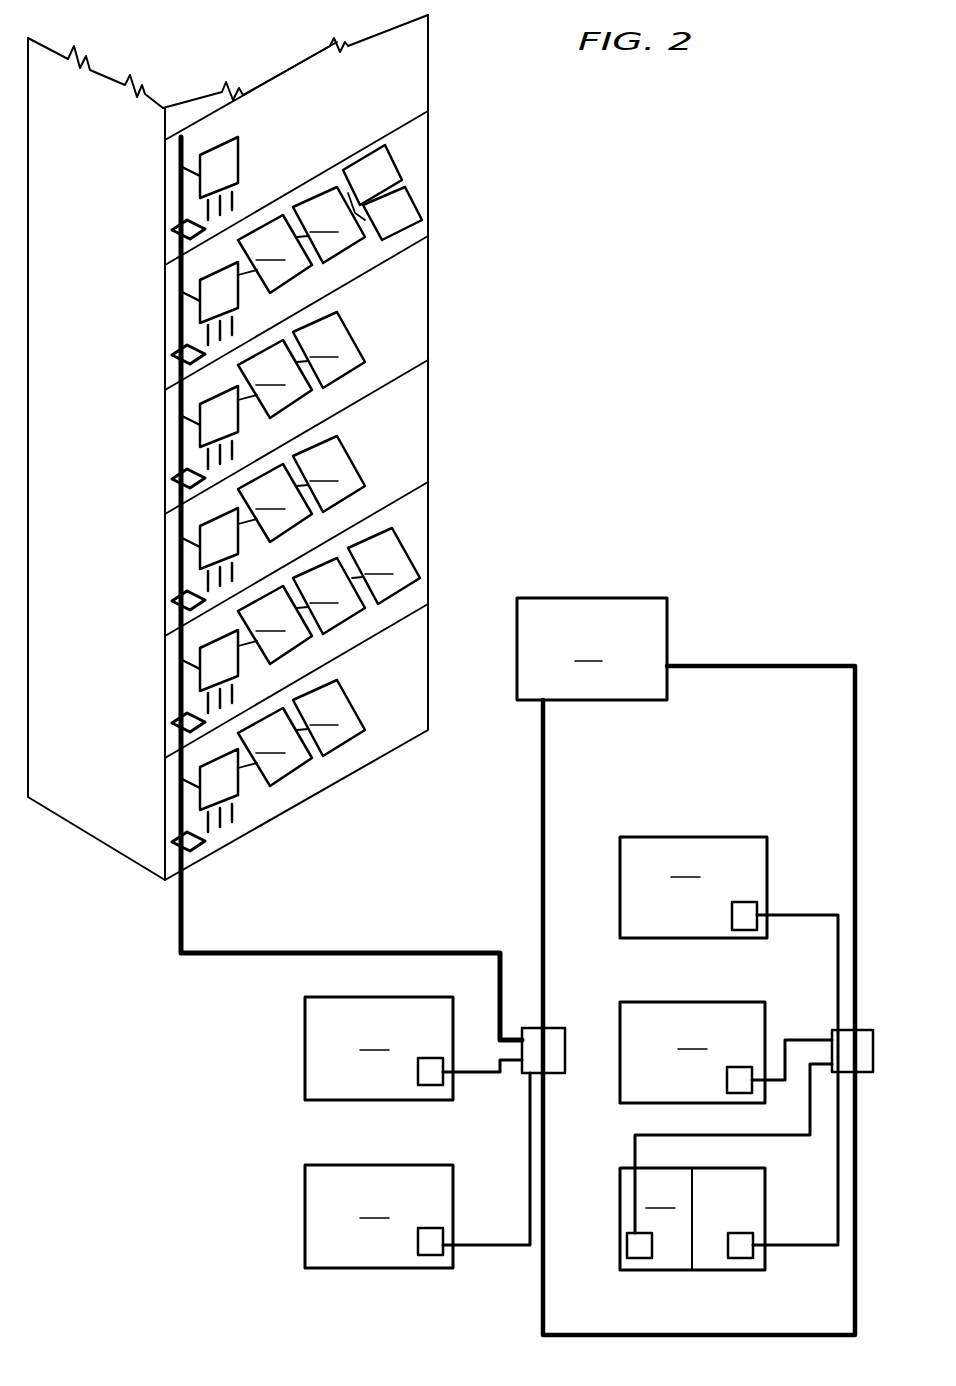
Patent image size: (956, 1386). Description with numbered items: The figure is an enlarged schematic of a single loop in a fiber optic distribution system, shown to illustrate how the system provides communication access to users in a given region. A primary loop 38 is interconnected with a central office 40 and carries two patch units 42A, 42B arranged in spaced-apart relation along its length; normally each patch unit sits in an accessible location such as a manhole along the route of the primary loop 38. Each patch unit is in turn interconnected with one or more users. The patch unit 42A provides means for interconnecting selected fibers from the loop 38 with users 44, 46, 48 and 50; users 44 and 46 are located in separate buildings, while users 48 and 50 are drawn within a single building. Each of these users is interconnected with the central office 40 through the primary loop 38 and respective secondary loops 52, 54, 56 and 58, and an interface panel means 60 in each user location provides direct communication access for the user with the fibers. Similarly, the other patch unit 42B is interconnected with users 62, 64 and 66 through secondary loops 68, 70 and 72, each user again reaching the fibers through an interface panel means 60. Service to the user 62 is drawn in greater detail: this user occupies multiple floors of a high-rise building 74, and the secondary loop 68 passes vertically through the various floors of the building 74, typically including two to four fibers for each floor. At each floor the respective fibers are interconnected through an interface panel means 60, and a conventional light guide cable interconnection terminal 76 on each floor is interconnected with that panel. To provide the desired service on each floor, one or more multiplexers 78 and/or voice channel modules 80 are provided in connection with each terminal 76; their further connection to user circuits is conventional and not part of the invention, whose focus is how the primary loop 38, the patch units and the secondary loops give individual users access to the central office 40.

The primary loop 38 is at (750, 661).
The central office 40 is at (592, 649).
The patch unit 42A is at (860, 1067).
The patch unit 42B is at (532, 1055).
The user 44 is at (693, 887).
The user 46 is at (692, 1052).
The user 48 is at (669, 1219).
The user 50 is at (717, 1219).
The secondary loop 52 is at (812, 913).
The secondary loop 54 is at (818, 1020).
The secondary loop 56 is at (775, 1143).
The secondary loop 58 is at (773, 1247).
The interface panel means 60 is at (238, 158).
The user 62 is at (285, 447).
The user 64 is at (379, 1048).
The user 66 is at (379, 1216).
The secondary loop 68 is at (178, 437).
The secondary loop 70 is at (485, 1070).
The secondary loop 72 is at (503, 1243).
The high-rise building 74 is at (432, 415).
The light guide cable interconnection terminal 76 is at (300, 500).
The multiplexer 78 is at (372, 168).
The voice channel module 80 is at (403, 207).